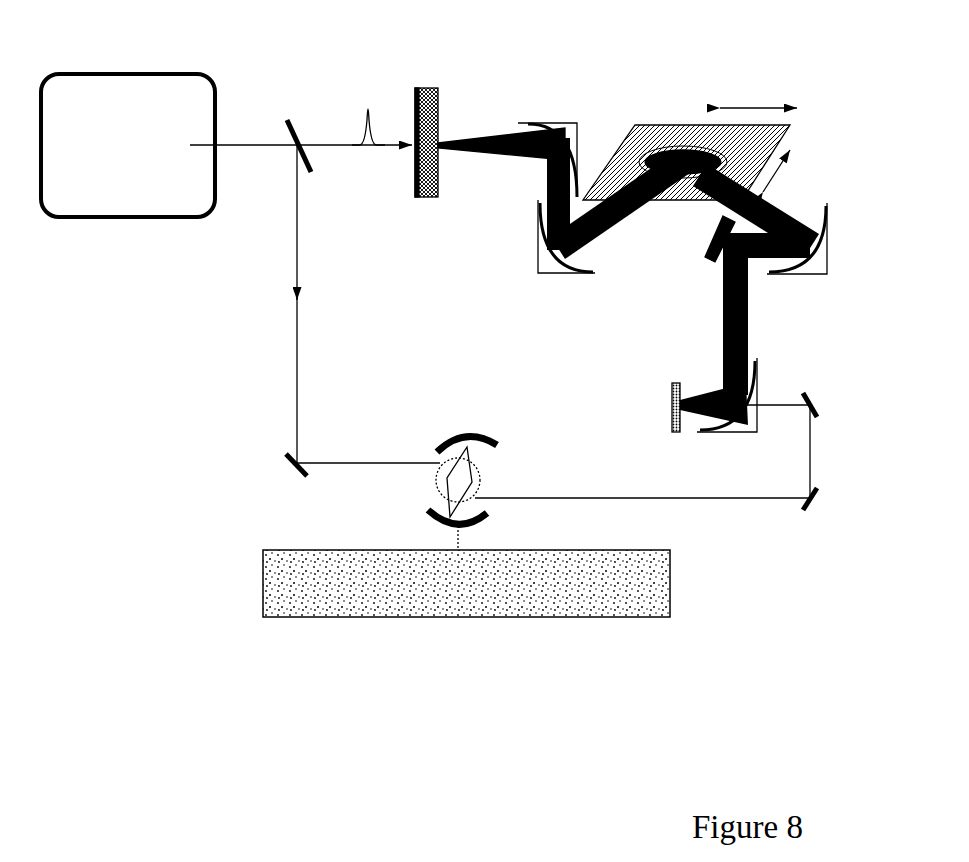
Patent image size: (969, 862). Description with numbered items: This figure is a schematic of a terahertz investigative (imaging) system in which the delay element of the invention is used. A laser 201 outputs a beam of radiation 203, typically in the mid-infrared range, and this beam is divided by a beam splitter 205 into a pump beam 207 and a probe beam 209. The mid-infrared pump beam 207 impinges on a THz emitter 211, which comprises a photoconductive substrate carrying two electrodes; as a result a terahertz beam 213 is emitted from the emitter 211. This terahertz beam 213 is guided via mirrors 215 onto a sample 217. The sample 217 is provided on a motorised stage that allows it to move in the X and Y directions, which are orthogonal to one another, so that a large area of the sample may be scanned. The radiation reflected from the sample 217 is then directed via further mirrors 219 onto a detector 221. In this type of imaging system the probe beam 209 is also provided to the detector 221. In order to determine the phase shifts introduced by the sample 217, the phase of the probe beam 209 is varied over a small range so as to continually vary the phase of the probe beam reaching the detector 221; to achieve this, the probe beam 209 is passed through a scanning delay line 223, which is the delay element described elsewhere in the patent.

The laser 201 is at (127, 160).
The beam of radiation 203 is at (241, 143).
The beam splitter 205 is at (303, 132).
The pump beam 207 is at (364, 150).
The probe beam 209 is at (292, 313).
The THz emitter 211 is at (438, 111).
The terahertz beam 213 is at (498, 157).
The mirrors 215 is at (561, 122).
The sample 217 is at (698, 128).
The mirrors 219 is at (760, 380).
The detector 221 is at (684, 436).
The scanning delay line 223 is at (432, 490).